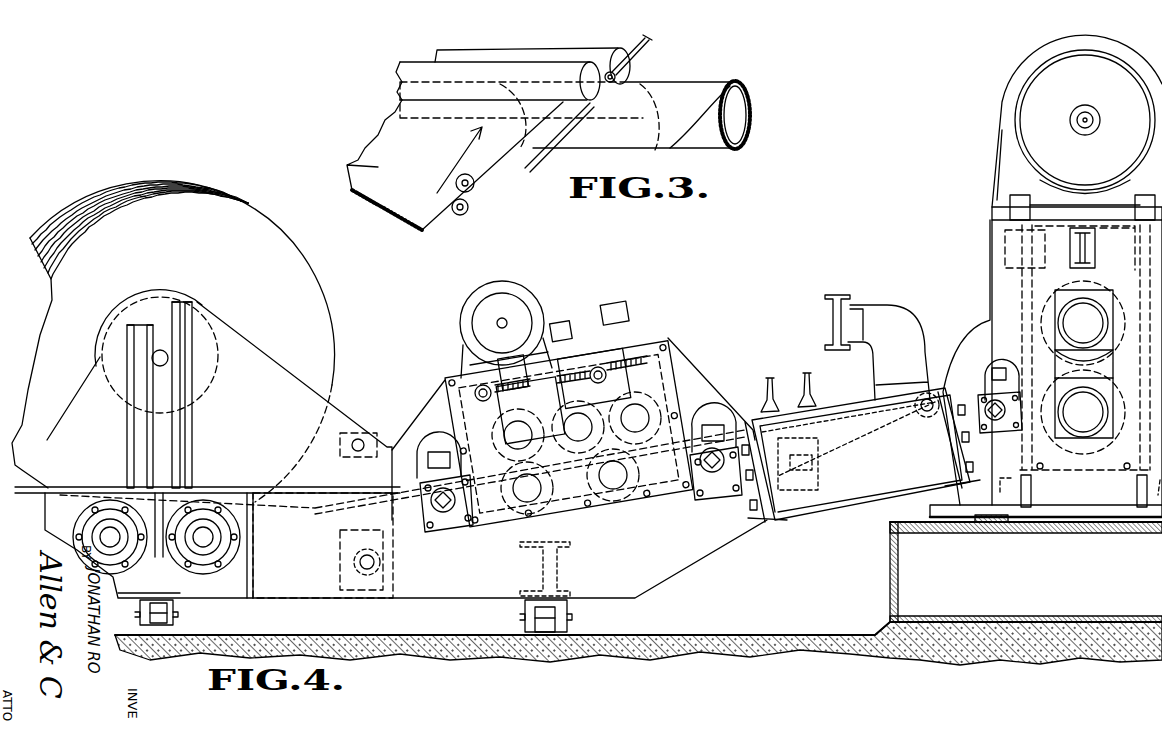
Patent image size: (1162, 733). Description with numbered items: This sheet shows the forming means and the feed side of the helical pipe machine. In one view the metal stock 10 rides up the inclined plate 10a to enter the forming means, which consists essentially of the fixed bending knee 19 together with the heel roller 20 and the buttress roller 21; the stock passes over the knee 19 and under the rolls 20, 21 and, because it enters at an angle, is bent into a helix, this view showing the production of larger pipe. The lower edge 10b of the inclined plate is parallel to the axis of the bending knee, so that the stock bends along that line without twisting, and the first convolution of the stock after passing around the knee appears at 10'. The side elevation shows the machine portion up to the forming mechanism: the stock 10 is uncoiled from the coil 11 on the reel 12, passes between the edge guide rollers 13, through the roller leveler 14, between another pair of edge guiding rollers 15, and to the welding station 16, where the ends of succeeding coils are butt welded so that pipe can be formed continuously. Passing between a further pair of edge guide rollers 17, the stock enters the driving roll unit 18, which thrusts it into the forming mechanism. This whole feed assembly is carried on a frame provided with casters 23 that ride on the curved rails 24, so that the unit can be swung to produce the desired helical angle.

In FIG. 3, the metal stock 10 is at (431, 165).
In FIG. 4, the metal stock 10 is at (861, 446).
In FIG. 3, the inclined plate 10a is at (527, 156).
In FIG. 3, the lower edge of inclined plate 10b is at (500, 167).
In FIG. 4, the first convolution of the stock 10' is at (402, 514).
In FIG. 4, the coil 11 is at (328, 322).
In FIG. 4, the reel 12 is at (203, 340).
In FIG. 4, the edge guide rollers 13 is at (440, 505).
In FIG. 4, the roller leveler 14 is at (650, 340).
In FIG. 4, the edge guiding rollers 15 is at (715, 483).
In FIG. 4, the welding station 16 is at (783, 377).
In FIG. 4, the edge guide rollers 17 is at (1000, 434).
In FIG. 4, the driving roll unit 18 is at (1043, 345).
In FIG. 3, the bending knee 19 is at (660, 80).
In FIG. 3, the heel roller 20 is at (410, 62).
In FIG. 3, the buttress roller 21 is at (485, 48).
In FIG. 4, the casters 23 is at (175, 608).
In FIG. 4, the curved rails 24 is at (228, 634).